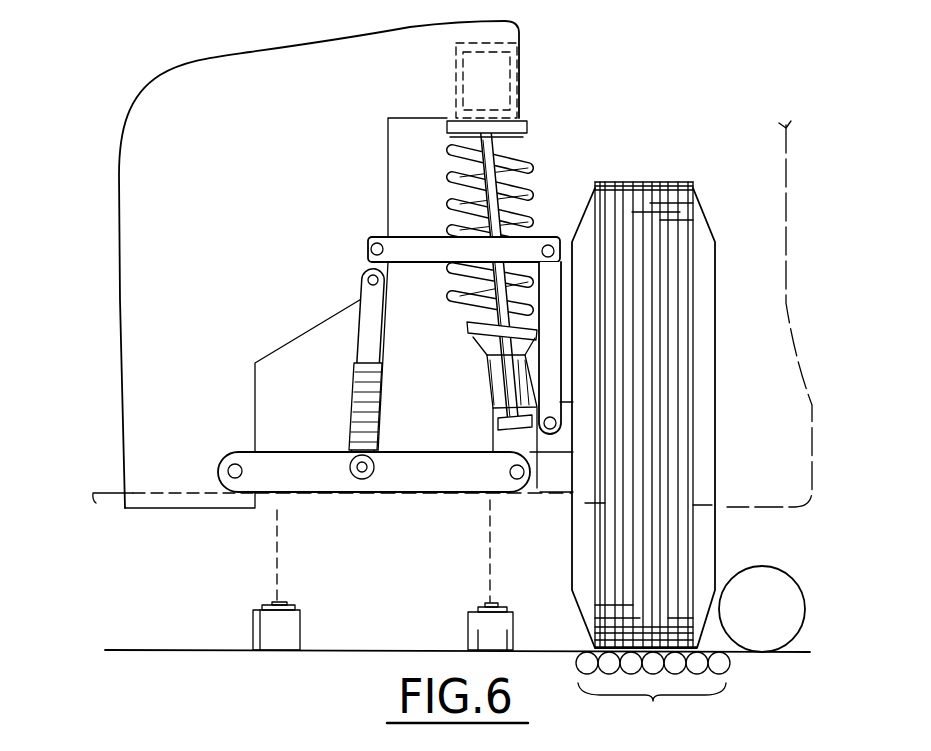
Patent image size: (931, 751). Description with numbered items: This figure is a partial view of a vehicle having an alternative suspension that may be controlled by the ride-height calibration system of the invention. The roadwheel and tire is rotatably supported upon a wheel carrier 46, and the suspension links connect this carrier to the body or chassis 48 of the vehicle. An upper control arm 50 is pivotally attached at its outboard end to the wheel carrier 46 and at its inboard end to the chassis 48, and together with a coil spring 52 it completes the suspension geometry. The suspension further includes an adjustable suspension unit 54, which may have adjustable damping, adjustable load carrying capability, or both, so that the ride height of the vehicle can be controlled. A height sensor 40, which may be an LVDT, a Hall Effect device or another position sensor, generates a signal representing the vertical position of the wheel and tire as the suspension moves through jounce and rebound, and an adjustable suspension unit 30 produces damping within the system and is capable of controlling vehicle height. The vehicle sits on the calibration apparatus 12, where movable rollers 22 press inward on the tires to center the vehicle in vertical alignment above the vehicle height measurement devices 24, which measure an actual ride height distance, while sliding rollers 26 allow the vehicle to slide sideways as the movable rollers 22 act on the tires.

The apparatus 12 is at (716, 421).
The movable rollers 22 is at (795, 582).
The vehicle height measurement devices 24 is at (480, 620).
The sliding rollers 26 is at (653, 694).
The adjustable suspension unit 30 is at (420, 478).
The height sensor 40 is at (352, 398).
The wheel carrier 46 is at (547, 442).
The body or chassis 48 is at (133, 192).
The upper control arm 50 is at (450, 255).
The coil spring 52 is at (518, 147).
The adjustable suspension unit 54 is at (533, 178).